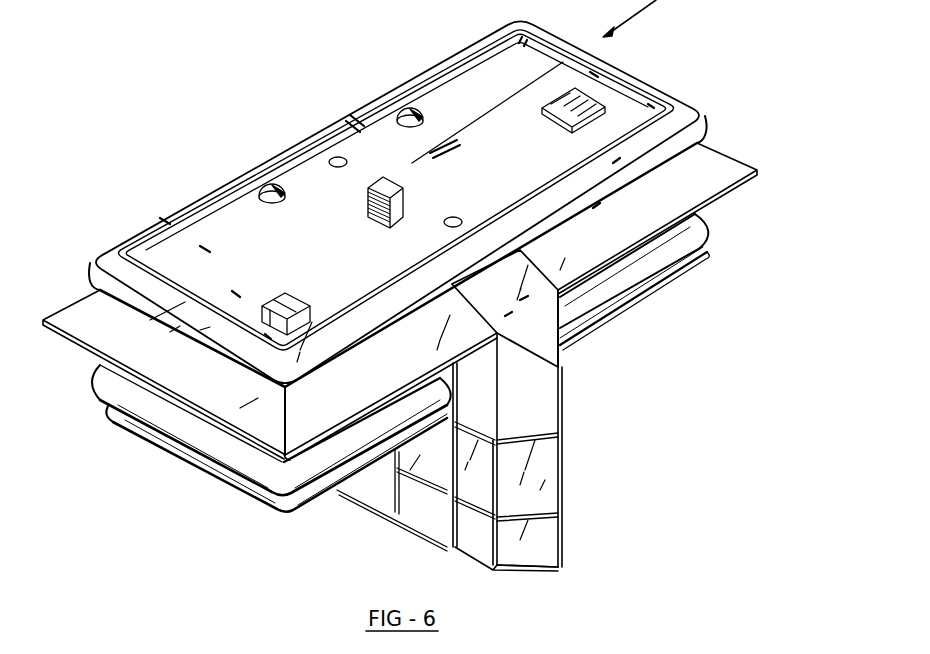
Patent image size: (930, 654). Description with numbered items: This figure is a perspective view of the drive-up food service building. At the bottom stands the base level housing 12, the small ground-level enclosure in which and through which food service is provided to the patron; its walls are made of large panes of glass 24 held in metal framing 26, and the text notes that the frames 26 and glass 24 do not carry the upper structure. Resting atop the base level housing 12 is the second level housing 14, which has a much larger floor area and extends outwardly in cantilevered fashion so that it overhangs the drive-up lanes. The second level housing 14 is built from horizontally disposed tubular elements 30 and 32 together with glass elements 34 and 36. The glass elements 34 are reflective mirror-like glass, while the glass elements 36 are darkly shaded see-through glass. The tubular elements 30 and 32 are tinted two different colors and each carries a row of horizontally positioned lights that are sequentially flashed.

The tubular element 30 is at (706, 100).
The glass element 34 is at (713, 158).
The second level housing 14 is at (425, 296).
The glass element 36 is at (710, 213).
The tubular element 32 is at (708, 252).
The base level housing 12 is at (412, 410).
The panes of glass 24 is at (547, 469).
The metal framing 26 is at (562, 505).